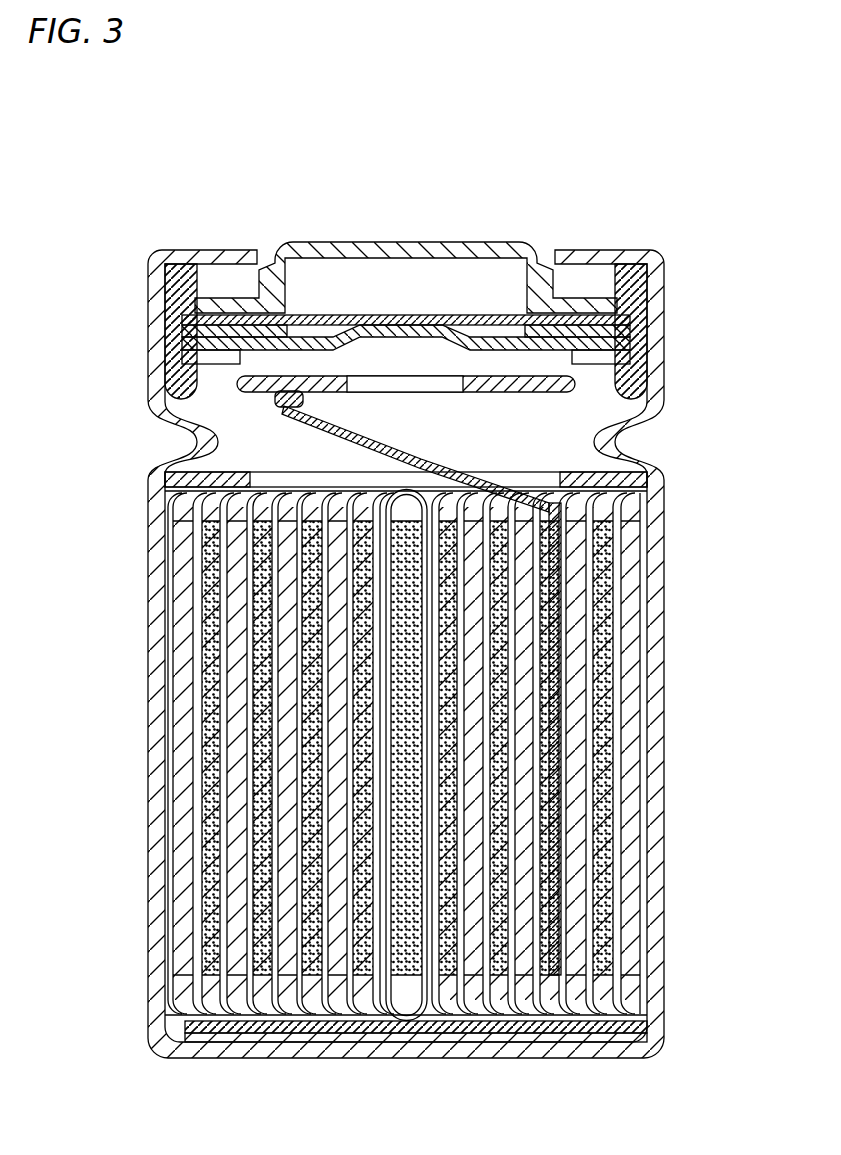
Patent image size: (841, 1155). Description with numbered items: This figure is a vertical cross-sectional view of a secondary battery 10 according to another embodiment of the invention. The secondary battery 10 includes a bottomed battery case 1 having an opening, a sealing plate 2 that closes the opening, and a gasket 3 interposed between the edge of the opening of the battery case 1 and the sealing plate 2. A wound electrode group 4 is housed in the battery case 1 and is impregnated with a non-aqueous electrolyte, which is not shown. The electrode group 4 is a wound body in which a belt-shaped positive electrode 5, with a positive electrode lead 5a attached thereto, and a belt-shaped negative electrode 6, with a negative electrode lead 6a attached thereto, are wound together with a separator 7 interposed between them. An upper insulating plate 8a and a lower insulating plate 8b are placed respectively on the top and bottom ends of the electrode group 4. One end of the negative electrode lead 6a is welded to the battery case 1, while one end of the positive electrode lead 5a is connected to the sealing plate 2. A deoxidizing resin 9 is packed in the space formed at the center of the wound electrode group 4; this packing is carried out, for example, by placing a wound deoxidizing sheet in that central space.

The battery case 1 is at (150, 669).
The sealing plate 2 is at (331, 250).
The gasket 3 is at (642, 330).
The wound electrode group 4 is at (454, 703).
The positive electrode 5 is at (457, 695).
The positive electrode lead 5a is at (400, 452).
The negative electrode 6 is at (628, 738).
The negative electrode lead 6a is at (460, 1043).
The separator 7 is at (643, 683).
The upper insulating plate 8a is at (650, 482).
The lower insulating plate 8b is at (650, 1027).
The deoxidizing resin 9 is at (410, 541).
The secondary battery 10 is at (464, 208).